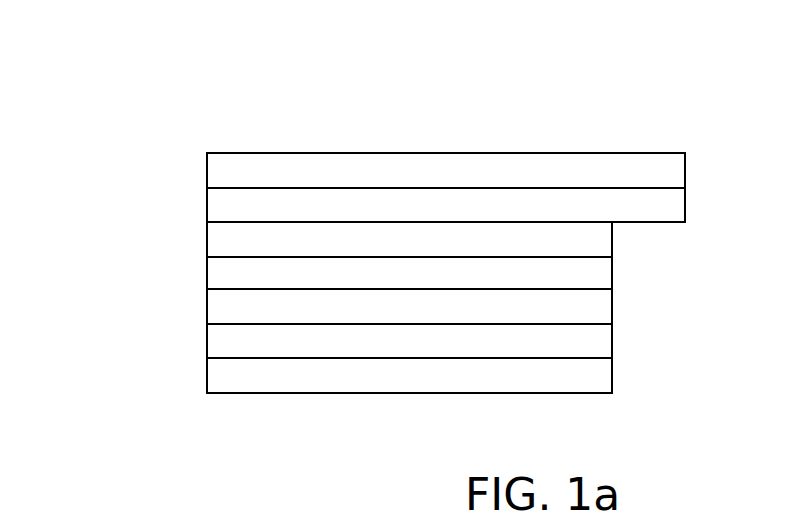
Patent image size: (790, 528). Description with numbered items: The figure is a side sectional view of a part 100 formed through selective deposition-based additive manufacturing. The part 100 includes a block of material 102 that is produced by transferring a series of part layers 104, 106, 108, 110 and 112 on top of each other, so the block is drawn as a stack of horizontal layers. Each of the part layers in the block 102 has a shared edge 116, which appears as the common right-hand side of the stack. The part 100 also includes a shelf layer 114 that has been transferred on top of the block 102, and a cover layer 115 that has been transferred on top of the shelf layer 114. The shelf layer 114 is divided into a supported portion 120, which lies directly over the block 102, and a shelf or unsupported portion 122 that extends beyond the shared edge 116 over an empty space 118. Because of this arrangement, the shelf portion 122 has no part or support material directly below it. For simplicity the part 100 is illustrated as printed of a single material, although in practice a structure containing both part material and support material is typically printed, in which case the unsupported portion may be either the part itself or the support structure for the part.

The part 100 is at (76, 66).
The block of material 102 is at (407, 412).
The part layer 104 is at (207, 375).
The part layer 106 is at (207, 341).
The part layer 108 is at (207, 307).
The part layer 110 is at (207, 273).
The part layer 112 is at (207, 240).
The shelf layer 114 is at (207, 205).
The cover layer 115 is at (207, 170).
The shared edge 116 is at (622, 262).
The empty space 118 is at (680, 249).
The supported portion 120 is at (611, 187).
The shelf or unsupported portion 122 is at (611, 187).